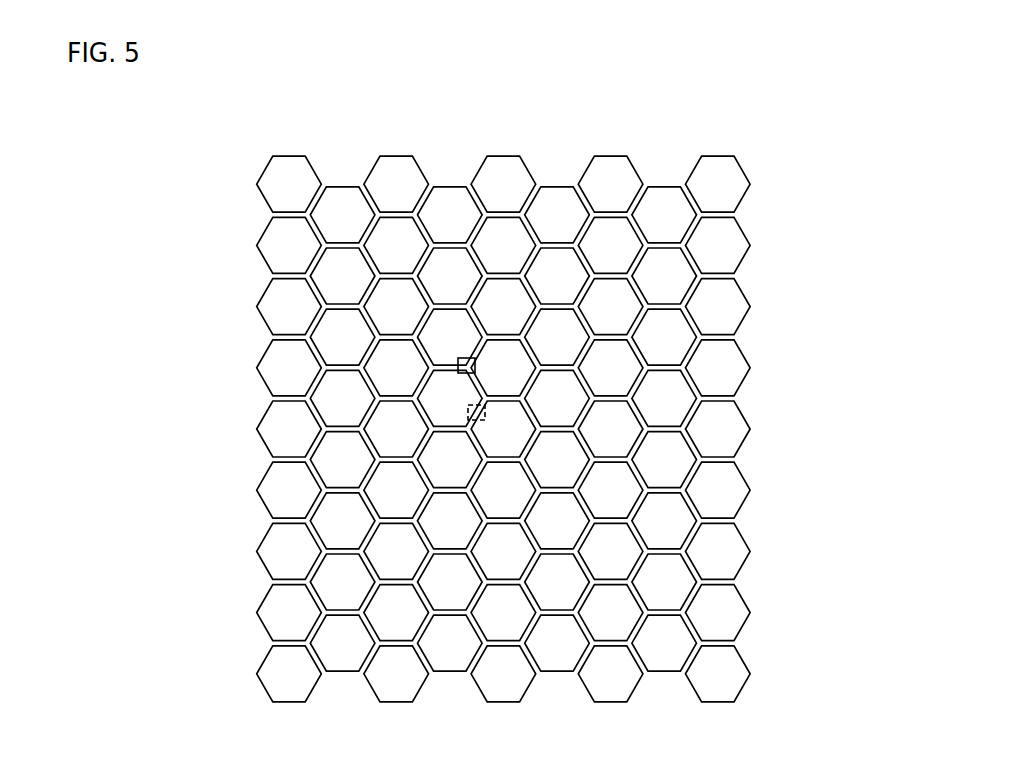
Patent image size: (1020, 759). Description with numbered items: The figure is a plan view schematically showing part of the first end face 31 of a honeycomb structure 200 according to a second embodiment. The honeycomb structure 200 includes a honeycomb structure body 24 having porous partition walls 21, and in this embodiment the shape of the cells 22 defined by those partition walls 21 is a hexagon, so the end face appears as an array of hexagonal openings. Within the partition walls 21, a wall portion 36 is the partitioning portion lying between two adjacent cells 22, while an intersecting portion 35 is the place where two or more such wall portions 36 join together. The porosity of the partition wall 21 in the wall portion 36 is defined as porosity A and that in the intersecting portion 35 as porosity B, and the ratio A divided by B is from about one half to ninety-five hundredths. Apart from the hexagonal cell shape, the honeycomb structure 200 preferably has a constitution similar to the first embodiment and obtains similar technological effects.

The honeycomb structure 200 is at (805, 98).
The partition wall 21 is at (549, 247).
The cell 22 is at (613, 306).
The honeycomb structure body 24 is at (755, 398).
The first end face 31 is at (293, 140).
The intersecting portion 35 is at (458, 366).
The wall portion 36 is at (468, 413).